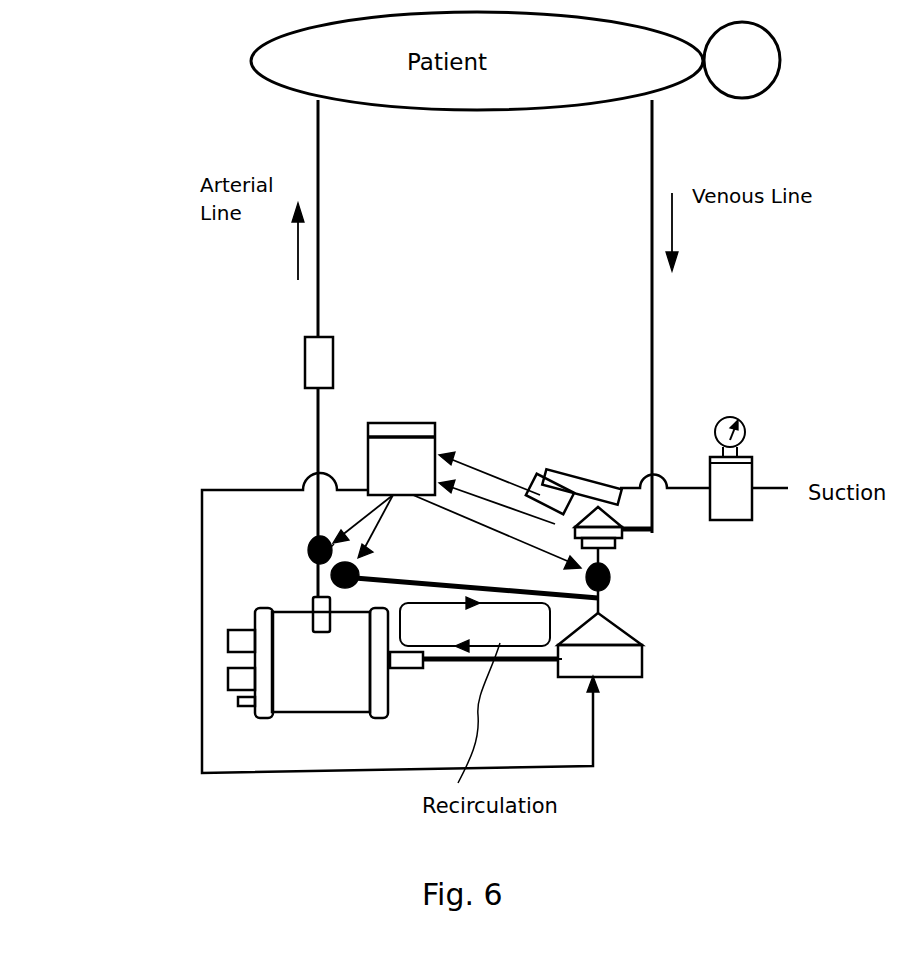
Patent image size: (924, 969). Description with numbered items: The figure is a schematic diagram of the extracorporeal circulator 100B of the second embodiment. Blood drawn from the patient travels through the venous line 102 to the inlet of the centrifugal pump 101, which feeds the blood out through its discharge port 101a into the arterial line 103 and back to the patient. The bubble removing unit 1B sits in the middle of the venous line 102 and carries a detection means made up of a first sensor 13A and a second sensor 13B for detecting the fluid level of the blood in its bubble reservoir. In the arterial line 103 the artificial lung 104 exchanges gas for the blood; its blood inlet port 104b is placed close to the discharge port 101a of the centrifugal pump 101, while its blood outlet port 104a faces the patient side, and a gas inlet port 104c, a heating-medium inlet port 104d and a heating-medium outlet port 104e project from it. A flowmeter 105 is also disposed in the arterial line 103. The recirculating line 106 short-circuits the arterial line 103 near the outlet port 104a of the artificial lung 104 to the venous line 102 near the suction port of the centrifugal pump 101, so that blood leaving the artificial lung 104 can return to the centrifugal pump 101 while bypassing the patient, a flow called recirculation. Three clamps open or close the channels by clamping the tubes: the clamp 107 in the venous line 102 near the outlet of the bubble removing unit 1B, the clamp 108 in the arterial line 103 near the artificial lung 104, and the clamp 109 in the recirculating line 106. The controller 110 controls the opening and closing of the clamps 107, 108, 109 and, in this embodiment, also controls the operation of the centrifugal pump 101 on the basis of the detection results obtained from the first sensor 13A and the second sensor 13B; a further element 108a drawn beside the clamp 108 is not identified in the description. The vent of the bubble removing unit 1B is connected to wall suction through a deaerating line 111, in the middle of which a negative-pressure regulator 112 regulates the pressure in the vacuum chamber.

The extracorporeal circulator 100B is at (180, 364).
The centrifugal pump 101 is at (632, 660).
The discharge port 101a is at (550, 655).
The venous line 102 is at (656, 323).
The arterial line 103 is at (320, 447).
The artificial lung 104 is at (320, 695).
The blood outlet port 104a is at (312, 600).
The blood inlet port 104b is at (403, 660).
The gas inlet port 104c is at (240, 700).
The heating-medium inlet port 104d is at (250, 638).
The heating-medium outlet port 104e is at (248, 678).
The flowmeter 105 is at (305, 365).
The recirculating line 106 is at (472, 586).
The clamp 107 is at (612, 577).
The clamp 108 is at (307, 550).
The valve control signal 108a is at (355, 513).
The clamp 109 is at (360, 574).
The controller 110 is at (408, 423).
The deaerating line 111 is at (688, 488).
The negative-pressure regulator 112 is at (740, 478).
The first sensor 13A is at (535, 488).
The second sensor 13B is at (558, 478).
The bubble removing unit 1B is at (582, 468).